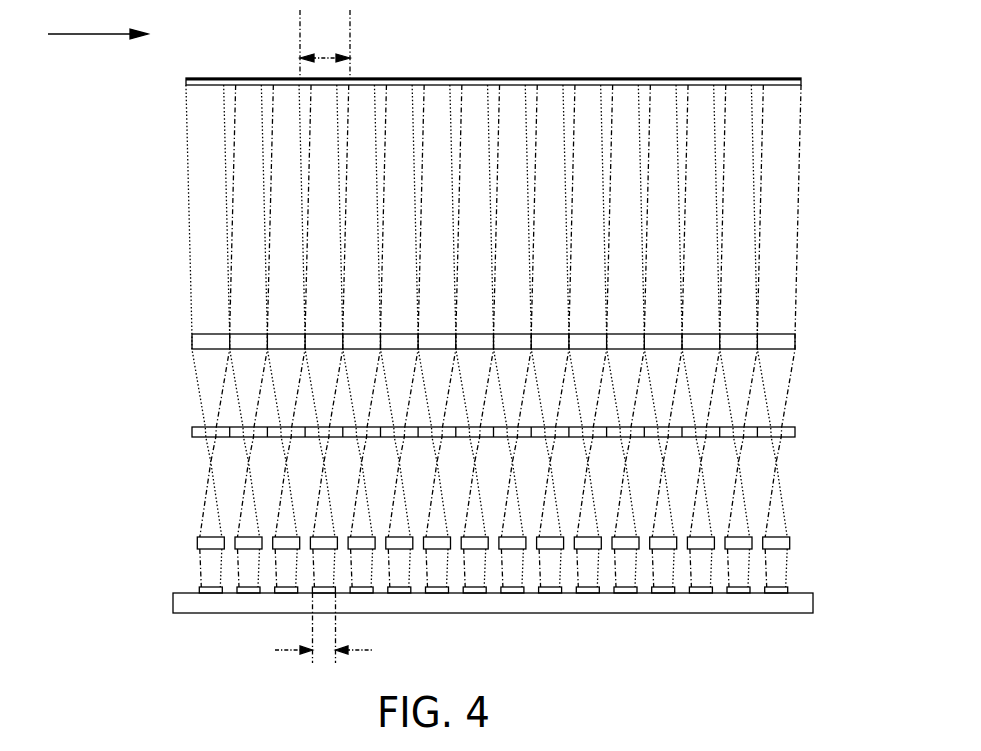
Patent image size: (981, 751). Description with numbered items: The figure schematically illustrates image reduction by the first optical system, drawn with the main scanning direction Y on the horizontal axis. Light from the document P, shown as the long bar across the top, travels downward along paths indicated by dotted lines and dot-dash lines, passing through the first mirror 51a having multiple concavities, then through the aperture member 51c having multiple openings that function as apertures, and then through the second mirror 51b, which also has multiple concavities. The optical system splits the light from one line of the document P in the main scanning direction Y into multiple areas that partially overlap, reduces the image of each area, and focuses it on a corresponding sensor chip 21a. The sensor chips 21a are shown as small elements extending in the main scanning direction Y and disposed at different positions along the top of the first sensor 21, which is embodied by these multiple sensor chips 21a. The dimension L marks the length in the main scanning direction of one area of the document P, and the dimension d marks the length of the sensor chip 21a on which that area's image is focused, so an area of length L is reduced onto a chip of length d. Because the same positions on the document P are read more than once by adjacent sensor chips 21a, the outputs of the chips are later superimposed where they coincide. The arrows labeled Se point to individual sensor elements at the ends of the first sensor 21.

The document P is at (493, 67).
The first mirror 51a is at (440, 358).
The second mirror 51b is at (438, 525).
The aperture member 51c is at (440, 449).
The first sensor 21 is at (466, 627).
The sensor chip 21a is at (437, 579).
The sensor element Se is at (213, 604).
The length of document area L is at (325, 44).
The length of sensor chip d is at (324, 632).
The main scanning direction Y is at (98, 46).